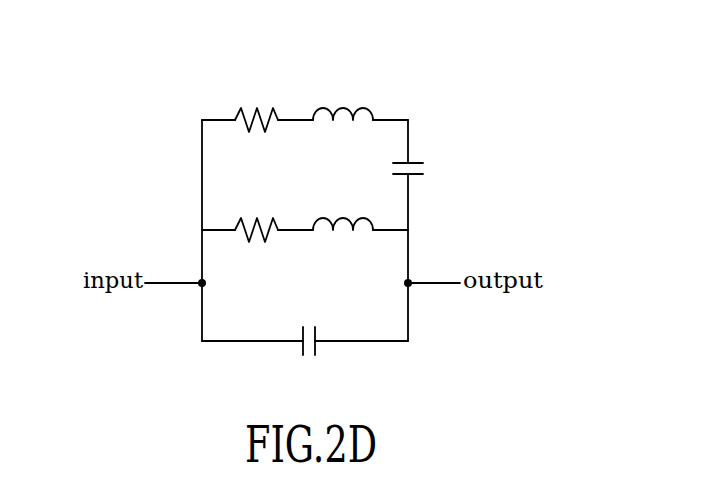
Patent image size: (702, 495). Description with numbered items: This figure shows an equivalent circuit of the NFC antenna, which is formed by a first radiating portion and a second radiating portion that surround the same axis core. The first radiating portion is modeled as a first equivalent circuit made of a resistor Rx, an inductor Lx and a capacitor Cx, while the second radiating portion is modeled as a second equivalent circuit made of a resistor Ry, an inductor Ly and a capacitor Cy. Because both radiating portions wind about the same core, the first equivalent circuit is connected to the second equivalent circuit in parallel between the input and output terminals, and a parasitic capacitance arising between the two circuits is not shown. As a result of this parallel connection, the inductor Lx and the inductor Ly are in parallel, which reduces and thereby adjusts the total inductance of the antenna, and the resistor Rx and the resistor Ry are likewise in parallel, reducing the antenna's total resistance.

The resistor Ry is at (256, 100).
The inductor Ly is at (343, 94).
The capacitor Cy is at (429, 170).
The resistor Rx is at (256, 212).
The inductor Lx is at (343, 206).
The capacitor Cx is at (310, 322).